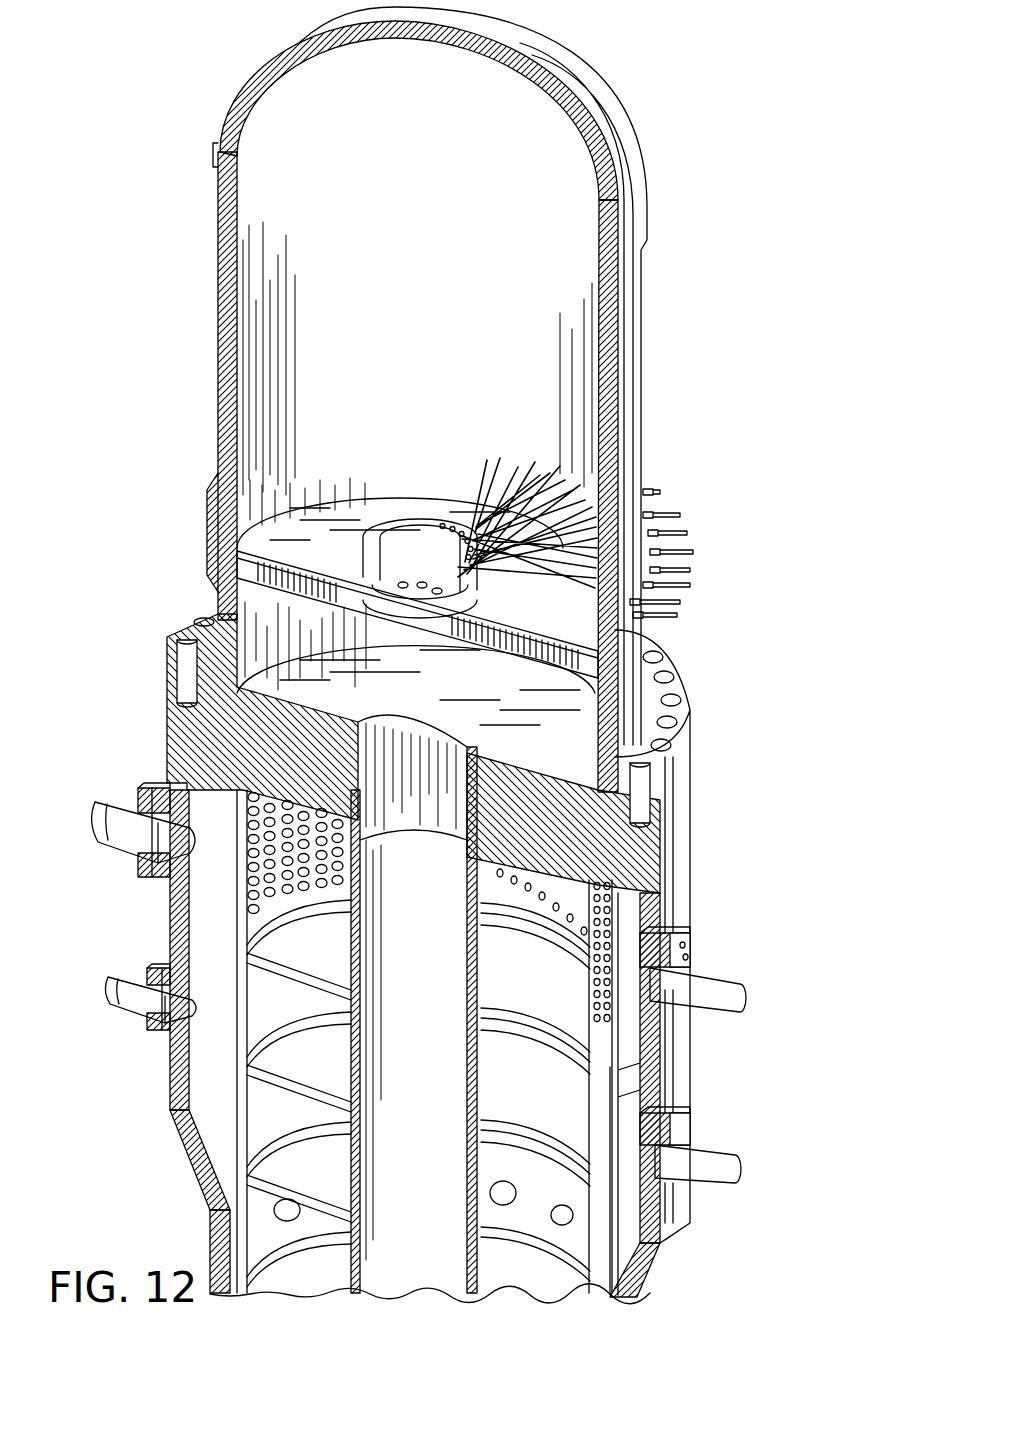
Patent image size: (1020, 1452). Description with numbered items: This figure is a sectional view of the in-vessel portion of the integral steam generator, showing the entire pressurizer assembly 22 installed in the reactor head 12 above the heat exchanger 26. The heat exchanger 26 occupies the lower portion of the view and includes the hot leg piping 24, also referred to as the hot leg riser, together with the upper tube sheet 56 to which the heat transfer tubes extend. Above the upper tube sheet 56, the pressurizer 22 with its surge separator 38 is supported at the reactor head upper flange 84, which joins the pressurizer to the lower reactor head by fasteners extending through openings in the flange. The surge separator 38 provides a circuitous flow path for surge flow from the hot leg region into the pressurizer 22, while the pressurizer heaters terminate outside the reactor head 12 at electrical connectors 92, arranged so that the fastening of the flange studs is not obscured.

The reactor head 12 is at (690, 862).
The pressurizer 22 is at (540, 387).
The hot leg piping 24 is at (430, 1163).
The heat exchanger 26 is at (612, 1118).
The surge separator 38 is at (262, 596).
The upper tube sheet 56 is at (690, 787).
The flange 84 is at (700, 696).
The electrical connectors 92 is at (700, 548).